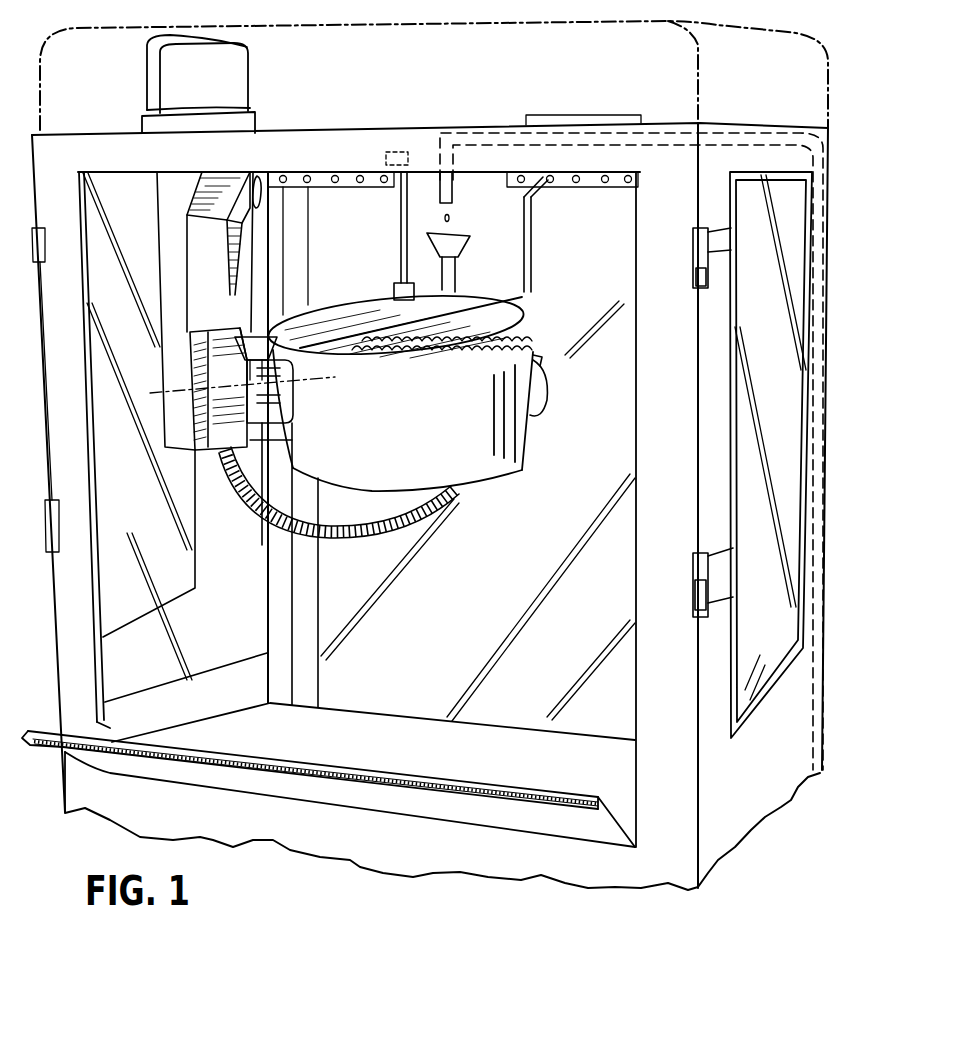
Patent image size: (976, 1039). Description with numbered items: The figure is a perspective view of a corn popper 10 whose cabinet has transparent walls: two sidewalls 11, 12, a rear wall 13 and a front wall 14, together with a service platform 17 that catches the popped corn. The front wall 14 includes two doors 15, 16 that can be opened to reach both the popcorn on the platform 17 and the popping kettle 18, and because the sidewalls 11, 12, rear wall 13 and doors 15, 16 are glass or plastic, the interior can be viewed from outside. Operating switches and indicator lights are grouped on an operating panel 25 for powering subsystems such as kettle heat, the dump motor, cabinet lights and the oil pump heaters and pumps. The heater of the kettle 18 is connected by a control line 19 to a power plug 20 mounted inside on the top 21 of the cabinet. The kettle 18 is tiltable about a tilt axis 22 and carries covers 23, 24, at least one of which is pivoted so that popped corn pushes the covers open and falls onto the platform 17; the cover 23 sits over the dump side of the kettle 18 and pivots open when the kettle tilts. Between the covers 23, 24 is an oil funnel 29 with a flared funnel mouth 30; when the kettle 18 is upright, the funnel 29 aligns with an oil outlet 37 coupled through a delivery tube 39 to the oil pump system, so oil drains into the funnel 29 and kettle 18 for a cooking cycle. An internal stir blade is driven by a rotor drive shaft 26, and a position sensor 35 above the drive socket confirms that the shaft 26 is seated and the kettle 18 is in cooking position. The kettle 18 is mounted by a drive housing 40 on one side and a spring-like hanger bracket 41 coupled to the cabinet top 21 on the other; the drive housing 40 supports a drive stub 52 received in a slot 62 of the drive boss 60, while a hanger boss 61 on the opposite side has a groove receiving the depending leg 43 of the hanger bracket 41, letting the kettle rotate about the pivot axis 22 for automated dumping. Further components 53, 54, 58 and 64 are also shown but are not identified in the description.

The corn popper 10 is at (785, 812).
The sidewall 11 is at (785, 765).
The sidewall 12 is at (208, 709).
The rear wall 13 is at (462, 643).
The front wall 14 is at (364, 848).
The door 15 is at (195, 588).
The door 16 is at (806, 612).
The service platform 17 is at (373, 732).
The popping kettle 18 is at (493, 460).
The control line 19 is at (340, 522).
The power plug 20 is at (250, 195).
The top 21 is at (385, 127).
The tilt axis 22 is at (157, 397).
The cover 23 is at (456, 288).
The cover 24 is at (318, 310).
The operating panel 25 is at (445, 185).
The rotor drive shaft 26 is at (400, 255).
The oil funnel 29 is at (438, 283).
The flared funnel mouth 30 is at (450, 236).
The position sensor 35 is at (386, 158).
The oil outlet 37 is at (515, 182).
The delivery tube 39 is at (812, 414).
The drive housing 40 is at (177, 295).
The hanger bracket 41 is at (530, 244).
The depending leg 43 is at (532, 262).
The drive stub 52 is at (230, 330).
The lower fitting 53 is at (270, 417).
The chute 54 is at (190, 186).
The lamp 58 is at (238, 78).
The drive boss 60 is at (268, 373).
The hanger boss 61 is at (540, 358).
The slot 62 is at (262, 340).
The cup 64 is at (245, 336).